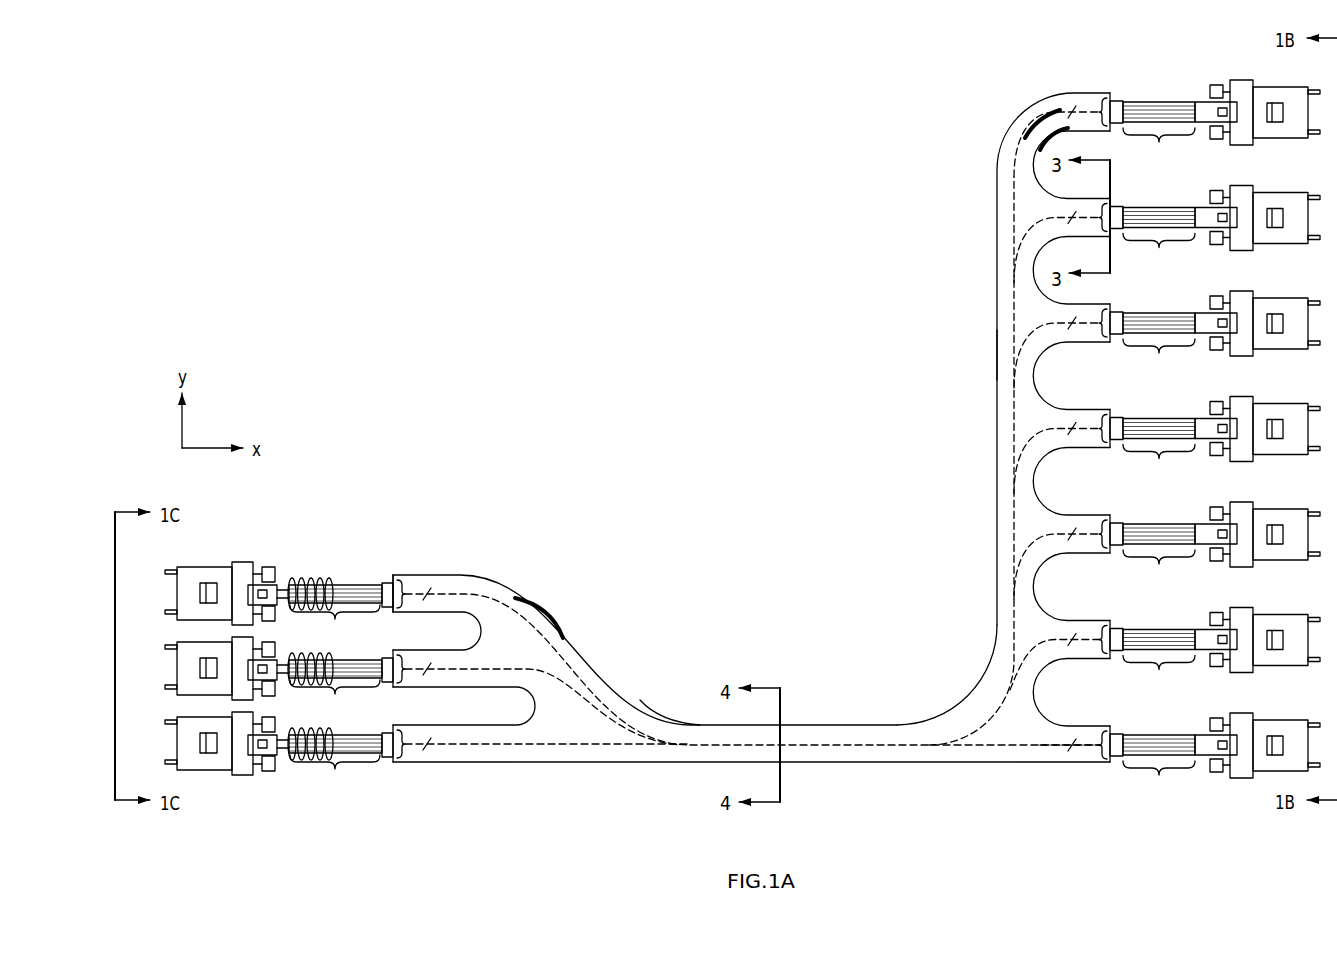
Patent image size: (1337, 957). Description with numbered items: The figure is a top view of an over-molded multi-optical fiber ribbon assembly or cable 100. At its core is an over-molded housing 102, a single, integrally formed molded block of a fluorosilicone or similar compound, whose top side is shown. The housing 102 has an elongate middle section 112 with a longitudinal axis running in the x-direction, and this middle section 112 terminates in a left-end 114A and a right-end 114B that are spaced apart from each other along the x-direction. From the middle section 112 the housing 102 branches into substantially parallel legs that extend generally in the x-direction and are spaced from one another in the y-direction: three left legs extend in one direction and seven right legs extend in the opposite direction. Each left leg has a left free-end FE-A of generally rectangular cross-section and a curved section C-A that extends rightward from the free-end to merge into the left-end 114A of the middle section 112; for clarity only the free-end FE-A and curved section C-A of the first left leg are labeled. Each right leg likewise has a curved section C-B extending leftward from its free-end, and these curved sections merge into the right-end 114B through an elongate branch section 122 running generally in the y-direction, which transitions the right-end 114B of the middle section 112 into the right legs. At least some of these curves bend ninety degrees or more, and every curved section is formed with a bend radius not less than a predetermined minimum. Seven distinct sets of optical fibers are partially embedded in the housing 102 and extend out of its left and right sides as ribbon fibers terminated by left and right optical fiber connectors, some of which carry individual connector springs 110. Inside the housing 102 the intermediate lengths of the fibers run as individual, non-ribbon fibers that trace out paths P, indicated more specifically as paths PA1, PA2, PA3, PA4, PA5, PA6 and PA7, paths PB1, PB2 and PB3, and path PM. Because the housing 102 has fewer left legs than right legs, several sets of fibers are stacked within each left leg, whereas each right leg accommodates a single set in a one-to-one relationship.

The over-molded multi-optical fiber ribbon assembly 100 is at (768, 240).
The over-molded housing 102 is at (992, 223).
The connector spring 110 is at (292, 578).
The elongate middle section 112 is at (797, 725).
The left-end 114A is at (665, 713).
The right-end 114B is at (916, 713).
The elongate branch section 122 is at (1000, 350).
The paths P is at (1008, 470).
The path PA1 is at (1085, 120).
The path PA2 is at (1057, 244).
The path PA3 is at (1057, 349).
The path PA4 is at (1057, 455).
The path PA5 is at (1057, 560).
The path PA6 is at (1055, 658).
The path PA7 is at (1037, 743).
The path PB1 is at (491, 603).
The path PB2 is at (529, 672).
The path PB3 is at (531, 743).
The path PM is at (823, 747).
The curved section C-A is at (543, 612).
The curved section C-B is at (1045, 145).
The left free-end FE-A is at (393, 574).